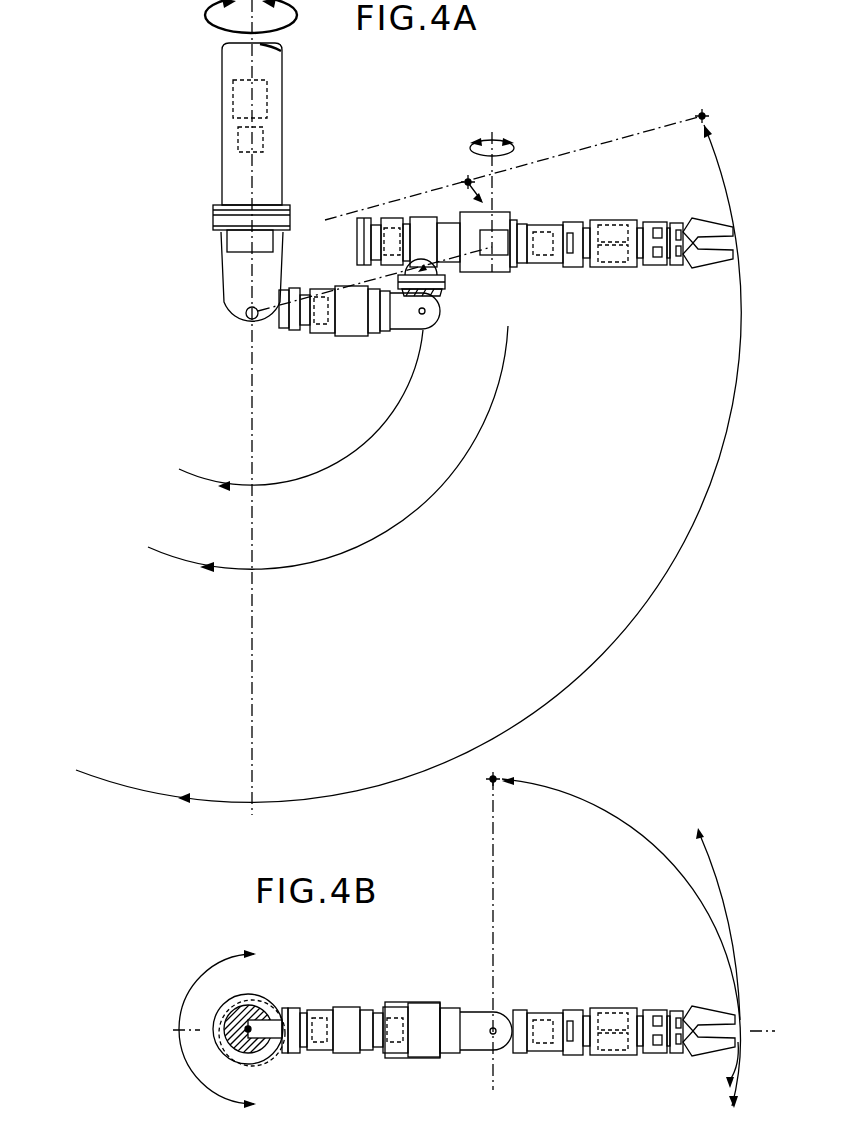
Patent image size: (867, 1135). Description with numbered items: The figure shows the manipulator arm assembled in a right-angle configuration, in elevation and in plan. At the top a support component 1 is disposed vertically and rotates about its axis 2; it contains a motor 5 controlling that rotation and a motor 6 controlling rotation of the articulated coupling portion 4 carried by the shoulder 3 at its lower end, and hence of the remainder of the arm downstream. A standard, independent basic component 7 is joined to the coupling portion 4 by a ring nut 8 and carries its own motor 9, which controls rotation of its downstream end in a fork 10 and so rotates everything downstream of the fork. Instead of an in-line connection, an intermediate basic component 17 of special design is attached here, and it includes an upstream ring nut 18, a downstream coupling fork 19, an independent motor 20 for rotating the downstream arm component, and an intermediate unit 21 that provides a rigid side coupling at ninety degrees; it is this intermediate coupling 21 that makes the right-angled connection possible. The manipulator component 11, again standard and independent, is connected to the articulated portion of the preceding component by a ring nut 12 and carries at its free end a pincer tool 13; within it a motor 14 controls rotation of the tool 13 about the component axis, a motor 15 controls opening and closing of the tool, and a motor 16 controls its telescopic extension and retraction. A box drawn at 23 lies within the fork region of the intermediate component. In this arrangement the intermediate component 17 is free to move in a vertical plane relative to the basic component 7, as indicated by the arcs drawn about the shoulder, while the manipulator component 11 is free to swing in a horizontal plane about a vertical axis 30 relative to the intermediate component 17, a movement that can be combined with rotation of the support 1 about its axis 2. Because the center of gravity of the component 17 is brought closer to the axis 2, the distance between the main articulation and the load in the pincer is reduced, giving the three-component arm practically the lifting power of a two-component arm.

In FIG. 4A, the support component 1 is at (210, 166).
In FIG. 4B, the support component 1 is at (258, 982).
In FIG. 4A, the axis 2 is at (252, 11).
In FIG. 4A, the shoulder 3 is at (240, 324).
In FIG. 4A, the articulated coupling portion 4 is at (282, 330).
In FIG. 4A, the motor 5 is at (233, 97).
In FIG. 4A, the motor 6 is at (238, 137).
In FIG. 4A, the basic component 7 is at (351, 357).
In FIG. 4B, the basic component 7 is at (343, 996).
In FIG. 4A, the ring nut 8 is at (296, 296).
In FIG. 4A, the motor 9 is at (321, 331).
In FIG. 4A, the fork 10 is at (406, 318).
In FIG. 4A, the manipulator component 11 is at (600, 280).
In FIG. 4B, the manipulator component 11 is at (597, 992).
In FIG. 4A, the ring nut 12 is at (522, 225).
In FIG. 4A, the pincer tool 13 is at (704, 257).
In FIG. 4B, the pincer tool 13 is at (703, 1018).
In FIG. 4A, the motor 14 is at (547, 263).
In FIG. 4A, the motor 15 is at (617, 223).
In FIG. 4B, the motor 15 is at (625, 1010).
In FIG. 4A, the motor 16 is at (613, 264).
In FIG. 4B, the motor 16 is at (618, 1052).
In FIG. 4A, the intermediate basic component 17 is at (419, 205).
In FIG. 4B, the intermediate basic component 17 is at (425, 993).
In FIG. 4A, the upstream ring nut 18 is at (443, 285).
In FIG. 4A, the downstream coupling fork 19 is at (481, 260).
In FIG. 4A, the motor 20 is at (391, 228).
In FIG. 4B, the motor 20 is at (392, 1018).
In FIG. 4A, the intermediate unit 21 is at (458, 277).
In FIG. 4A, the rotary drive box 23 is at (493, 242).
In FIG. 4A, the vertical axis 30 is at (488, 163).